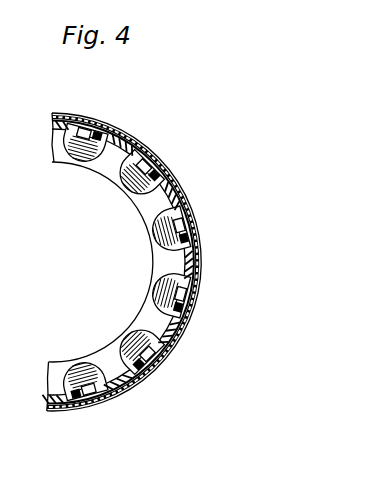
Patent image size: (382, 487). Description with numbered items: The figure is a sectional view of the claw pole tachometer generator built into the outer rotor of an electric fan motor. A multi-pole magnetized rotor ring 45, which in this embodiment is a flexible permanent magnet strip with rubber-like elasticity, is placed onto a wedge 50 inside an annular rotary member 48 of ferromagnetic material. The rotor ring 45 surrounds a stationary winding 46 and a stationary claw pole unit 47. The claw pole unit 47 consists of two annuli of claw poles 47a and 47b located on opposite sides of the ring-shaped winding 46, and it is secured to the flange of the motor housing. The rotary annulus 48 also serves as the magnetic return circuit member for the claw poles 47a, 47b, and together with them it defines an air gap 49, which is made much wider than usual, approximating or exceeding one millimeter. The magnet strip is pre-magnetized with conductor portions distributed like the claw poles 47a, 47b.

The multi-pole magnetized rotor ring 45 is at (184, 196).
The stationary winding 46 is at (131, 343).
The stationary claw pole unit 47 is at (152, 204).
The claw poles 47a is at (116, 153).
The claw poles 47b is at (186, 300).
The annular rotary member 48 is at (163, 163).
The air gap 49 is at (155, 368).
The wedge 50 is at (191, 212).